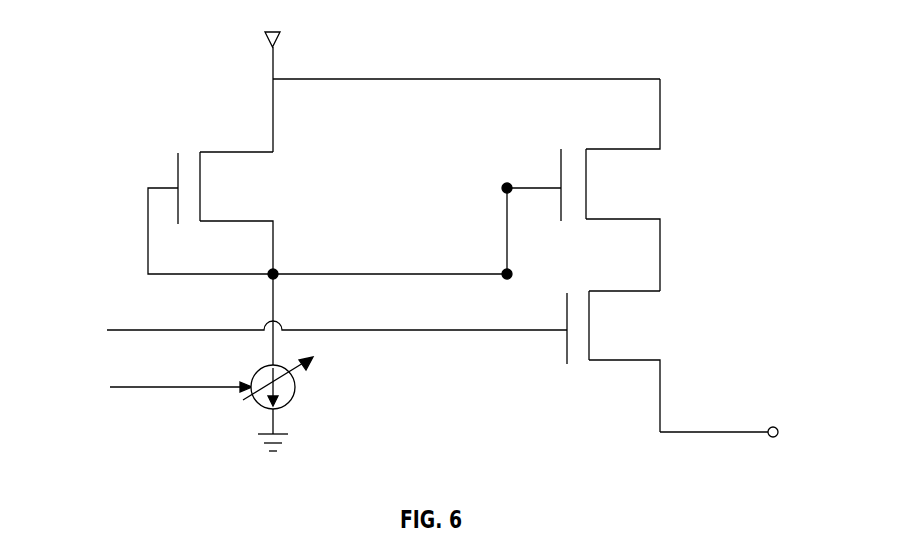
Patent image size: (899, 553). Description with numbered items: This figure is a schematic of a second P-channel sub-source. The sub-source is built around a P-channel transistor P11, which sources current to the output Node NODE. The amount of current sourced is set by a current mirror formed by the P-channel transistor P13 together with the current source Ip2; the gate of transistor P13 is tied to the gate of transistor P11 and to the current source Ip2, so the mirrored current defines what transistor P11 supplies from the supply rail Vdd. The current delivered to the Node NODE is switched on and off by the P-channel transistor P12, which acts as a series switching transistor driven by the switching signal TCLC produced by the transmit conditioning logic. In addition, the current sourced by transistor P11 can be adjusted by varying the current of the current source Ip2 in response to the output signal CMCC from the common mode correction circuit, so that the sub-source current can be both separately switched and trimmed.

The P-channel transistor P11 is at (638, 185).
The P-channel transistor P12 is at (642, 361).
The P-channel transistor P13 is at (236, 215).
The current source Ip2 is at (295, 362).
The supply voltage Vdd is at (462, 90).
The switching signal TCLC is at (296, 330).
The output signal CMCC is at (139, 388).
The Node NODE is at (752, 433).